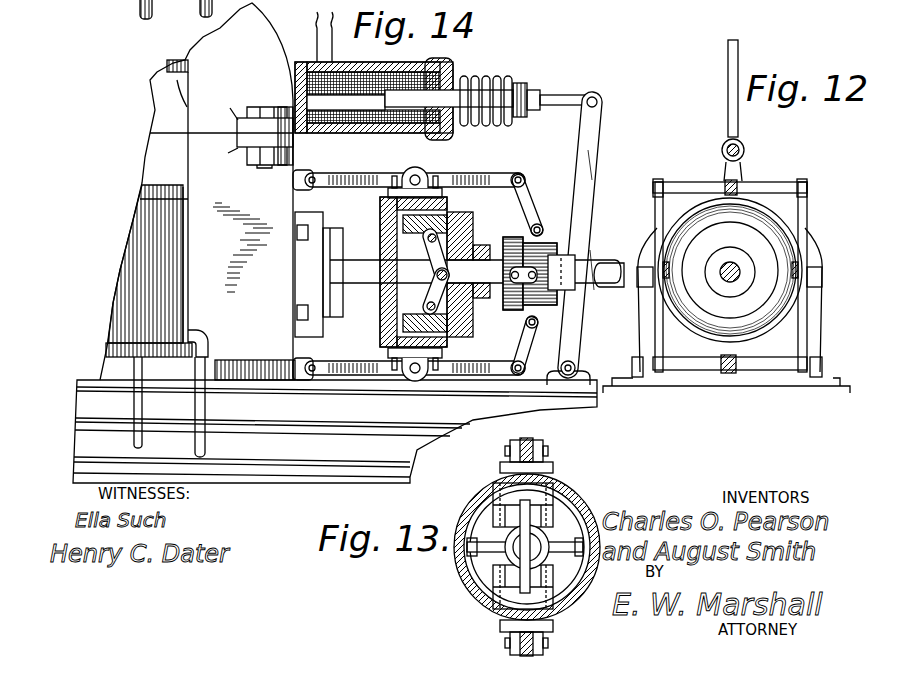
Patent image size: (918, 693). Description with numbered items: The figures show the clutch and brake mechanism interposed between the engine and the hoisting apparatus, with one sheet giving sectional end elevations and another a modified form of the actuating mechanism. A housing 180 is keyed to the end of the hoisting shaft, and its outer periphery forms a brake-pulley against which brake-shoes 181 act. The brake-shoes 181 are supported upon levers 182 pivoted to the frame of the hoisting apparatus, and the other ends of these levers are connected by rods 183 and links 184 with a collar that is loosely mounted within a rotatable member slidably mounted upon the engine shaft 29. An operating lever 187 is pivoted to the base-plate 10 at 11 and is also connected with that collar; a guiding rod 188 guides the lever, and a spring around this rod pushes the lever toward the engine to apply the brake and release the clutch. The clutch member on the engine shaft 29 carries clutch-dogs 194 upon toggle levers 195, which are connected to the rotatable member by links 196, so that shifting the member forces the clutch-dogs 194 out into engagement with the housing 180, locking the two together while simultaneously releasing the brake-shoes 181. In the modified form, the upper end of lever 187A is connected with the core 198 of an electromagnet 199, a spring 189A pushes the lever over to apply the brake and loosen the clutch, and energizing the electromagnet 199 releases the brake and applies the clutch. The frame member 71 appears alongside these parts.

In FIG. 14, the base-plate 10 is at (90, 447).
In FIG. 14, the pivot 11 is at (565, 370).
In FIG. 12, the pivot 11 is at (633, 363).
In FIG. 12, the engine shaft 29 is at (735, 272).
In FIG. 14, the machine frame 71 is at (283, 212).
In FIG. 14, the housing 180 is at (390, 318).
In FIG. 13, the housing 180 is at (490, 597).
In FIG. 14, the brake-shoes 181 is at (437, 192).
In FIG. 13, the brake-shoes 181 is at (503, 463).
In FIG. 14, the levers 182 is at (375, 178).
In FIG. 13, the levers 182 is at (530, 439).
In FIG. 12, the rods 183 is at (770, 184).
In FIG. 14, the links 184 is at (531, 201).
In FIG. 12, the links 184 is at (657, 217).
In FIG. 12, the operating lever 187 is at (739, 64).
In FIG. 14, the lever 187A is at (596, 146).
In FIG. 12, the guiding rod 188 is at (722, 140).
In FIG. 14, the spring 189A is at (480, 78).
In FIG. 14, the clutch-dogs 194 is at (423, 255).
In FIG. 13, the clutch-dogs 194 is at (533, 490).
In FIG. 14, the toggle levers 195 is at (425, 291).
In FIG. 13, the toggle levers 195 is at (535, 563).
In FIG. 14, the links 196 is at (502, 254).
In FIG. 12, the links 196 is at (800, 325).
In FIG. 13, the links 196 is at (583, 530).
In FIG. 14, the core 198 is at (484, 104).
In FIG. 14, the electromagnet 199 is at (368, 80).